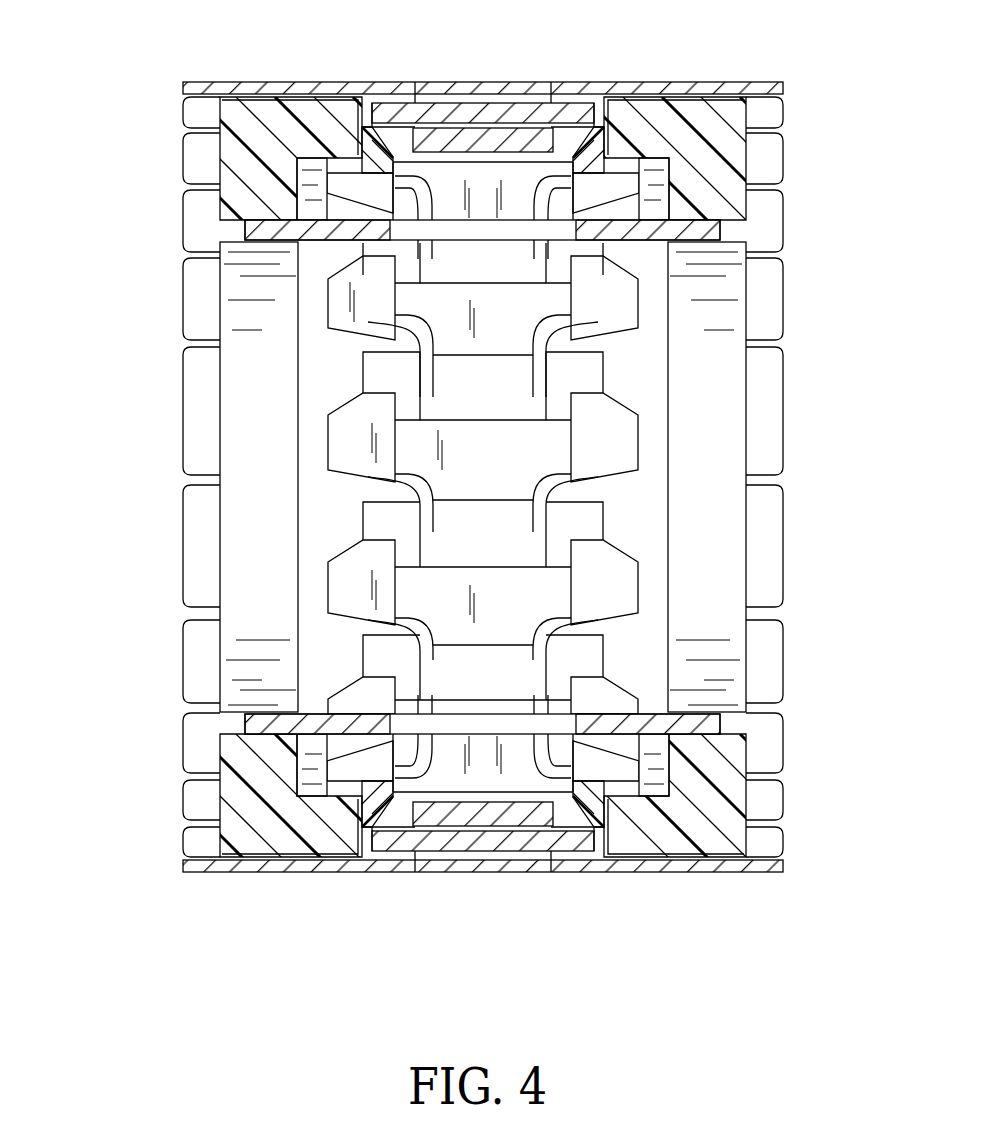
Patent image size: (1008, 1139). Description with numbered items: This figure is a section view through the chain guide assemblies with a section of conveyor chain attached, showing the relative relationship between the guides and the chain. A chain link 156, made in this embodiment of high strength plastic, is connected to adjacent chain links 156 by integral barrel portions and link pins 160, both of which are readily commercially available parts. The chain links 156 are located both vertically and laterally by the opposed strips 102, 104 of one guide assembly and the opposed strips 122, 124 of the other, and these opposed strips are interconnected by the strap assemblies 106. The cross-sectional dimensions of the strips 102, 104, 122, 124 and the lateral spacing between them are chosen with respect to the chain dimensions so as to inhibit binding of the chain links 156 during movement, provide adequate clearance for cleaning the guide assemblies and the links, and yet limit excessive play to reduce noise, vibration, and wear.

The strip 102 is at (264, 480).
The strip 122 is at (255, 147).
The strip 104 is at (731, 480).
The strip 124 is at (735, 148).
The strap assembly 106 is at (722, 227).
The chain link 156 is at (593, 92).
The link pin 160 is at (385, 92).